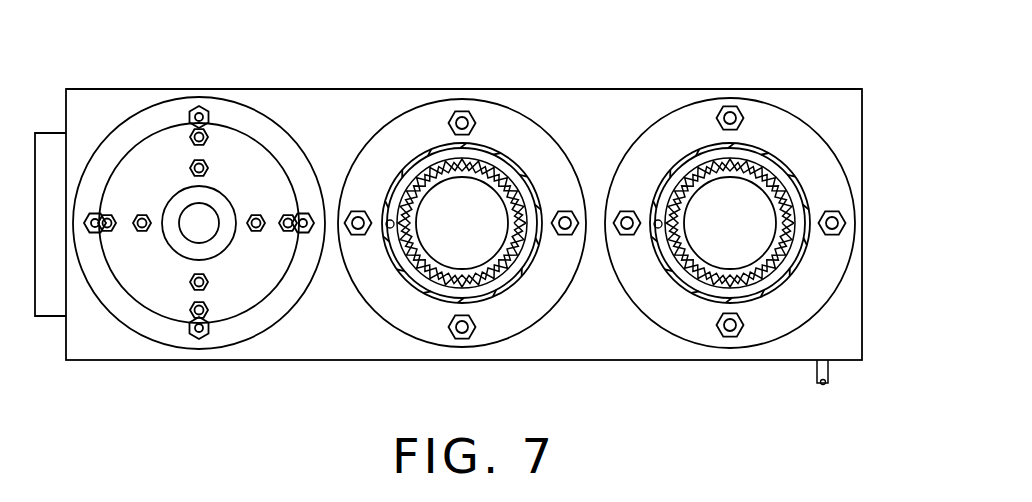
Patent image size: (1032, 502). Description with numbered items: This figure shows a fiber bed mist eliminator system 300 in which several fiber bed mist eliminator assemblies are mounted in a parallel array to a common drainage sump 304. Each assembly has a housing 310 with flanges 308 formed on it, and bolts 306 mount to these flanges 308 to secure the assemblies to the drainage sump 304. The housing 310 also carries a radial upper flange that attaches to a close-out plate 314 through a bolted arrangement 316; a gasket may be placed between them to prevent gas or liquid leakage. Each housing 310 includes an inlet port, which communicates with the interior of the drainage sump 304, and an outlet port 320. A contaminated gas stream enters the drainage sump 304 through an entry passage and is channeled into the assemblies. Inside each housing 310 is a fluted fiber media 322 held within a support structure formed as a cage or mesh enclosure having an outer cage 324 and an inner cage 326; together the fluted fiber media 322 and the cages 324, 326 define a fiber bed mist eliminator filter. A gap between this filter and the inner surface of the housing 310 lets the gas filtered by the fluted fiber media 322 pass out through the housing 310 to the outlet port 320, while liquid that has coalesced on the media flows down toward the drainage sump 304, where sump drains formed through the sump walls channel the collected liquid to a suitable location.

The fiber bed mist eliminator system 300 is at (818, 56).
The drainage sump 304 is at (617, 89).
The bolts 306 is at (463, 334).
The flanges 308 is at (410, 327).
The housings 310 is at (502, 293).
The close-out plate 314 is at (239, 300).
The bolted arrangement 316 is at (177, 321).
The outlet port 320 is at (177, 245).
The fluted fiber media 322 is at (483, 167).
The outer cage 324 is at (420, 267).
The inner cage 326 is at (425, 261).